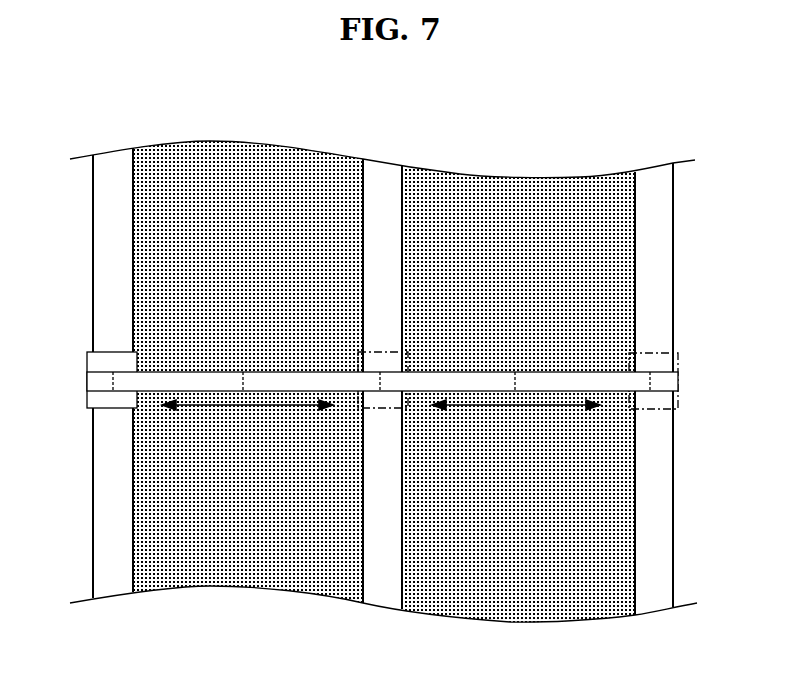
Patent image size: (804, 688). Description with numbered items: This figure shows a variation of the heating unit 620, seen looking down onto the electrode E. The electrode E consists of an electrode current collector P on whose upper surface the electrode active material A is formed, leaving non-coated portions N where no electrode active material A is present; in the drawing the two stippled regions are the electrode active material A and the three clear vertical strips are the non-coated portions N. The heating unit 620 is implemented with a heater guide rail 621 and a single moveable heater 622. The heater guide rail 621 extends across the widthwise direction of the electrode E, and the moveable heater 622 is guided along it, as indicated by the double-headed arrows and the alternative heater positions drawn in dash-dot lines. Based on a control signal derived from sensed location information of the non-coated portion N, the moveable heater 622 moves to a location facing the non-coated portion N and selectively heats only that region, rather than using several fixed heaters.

The heating unit 620 is at (392, 346).
The heater guide rail 621 is at (87, 382).
The moveable heater 622 is at (87, 361).
The electrode active material A is at (247, 181).
The non-coated portion N is at (113, 578).
The electrode E is at (676, 303).
The electrode current collector P is at (674, 465).